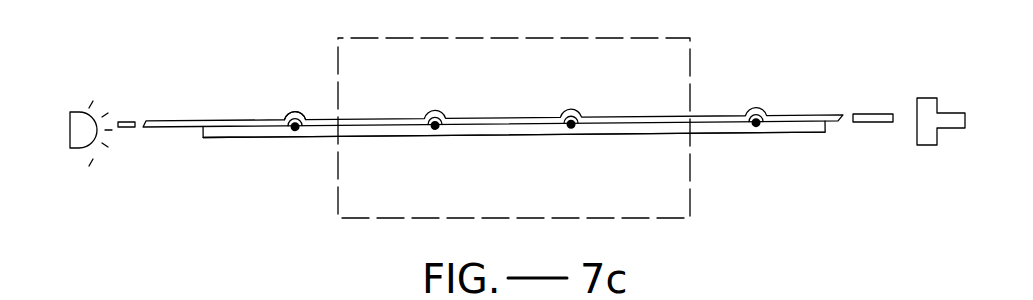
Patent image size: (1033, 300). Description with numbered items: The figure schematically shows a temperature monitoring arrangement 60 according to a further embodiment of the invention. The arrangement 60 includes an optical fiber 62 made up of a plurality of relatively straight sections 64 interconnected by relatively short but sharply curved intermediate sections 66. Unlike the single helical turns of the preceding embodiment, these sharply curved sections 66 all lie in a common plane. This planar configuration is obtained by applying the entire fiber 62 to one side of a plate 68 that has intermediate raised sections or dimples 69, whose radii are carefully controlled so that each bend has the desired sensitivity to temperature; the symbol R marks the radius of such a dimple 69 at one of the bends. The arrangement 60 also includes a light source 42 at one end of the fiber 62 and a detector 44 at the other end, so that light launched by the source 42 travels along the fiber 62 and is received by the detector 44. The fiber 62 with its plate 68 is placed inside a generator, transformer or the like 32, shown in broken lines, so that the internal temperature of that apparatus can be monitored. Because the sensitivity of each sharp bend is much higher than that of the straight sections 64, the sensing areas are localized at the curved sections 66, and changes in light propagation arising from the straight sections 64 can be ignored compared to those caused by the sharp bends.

The generator, transformer or the like 32 is at (668, 38).
The light source 42 is at (84, 119).
The detector 44 is at (927, 97).
The arrangement 60 is at (492, 106).
The optical fiber 62 is at (221, 131).
The relatively straight section 64 is at (181, 92).
The sharply curved intermediate section 66 is at (302, 114).
The plate 68 is at (328, 137).
The raised sections or dimples 69 is at (303, 136).
The resistor element R is at (438, 132).